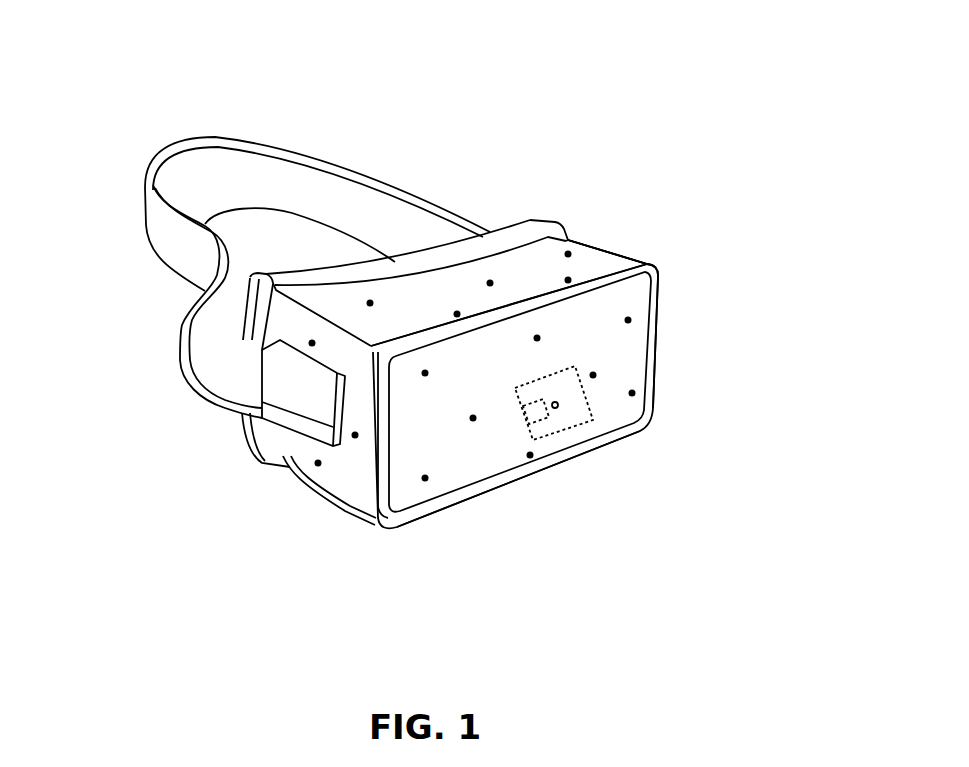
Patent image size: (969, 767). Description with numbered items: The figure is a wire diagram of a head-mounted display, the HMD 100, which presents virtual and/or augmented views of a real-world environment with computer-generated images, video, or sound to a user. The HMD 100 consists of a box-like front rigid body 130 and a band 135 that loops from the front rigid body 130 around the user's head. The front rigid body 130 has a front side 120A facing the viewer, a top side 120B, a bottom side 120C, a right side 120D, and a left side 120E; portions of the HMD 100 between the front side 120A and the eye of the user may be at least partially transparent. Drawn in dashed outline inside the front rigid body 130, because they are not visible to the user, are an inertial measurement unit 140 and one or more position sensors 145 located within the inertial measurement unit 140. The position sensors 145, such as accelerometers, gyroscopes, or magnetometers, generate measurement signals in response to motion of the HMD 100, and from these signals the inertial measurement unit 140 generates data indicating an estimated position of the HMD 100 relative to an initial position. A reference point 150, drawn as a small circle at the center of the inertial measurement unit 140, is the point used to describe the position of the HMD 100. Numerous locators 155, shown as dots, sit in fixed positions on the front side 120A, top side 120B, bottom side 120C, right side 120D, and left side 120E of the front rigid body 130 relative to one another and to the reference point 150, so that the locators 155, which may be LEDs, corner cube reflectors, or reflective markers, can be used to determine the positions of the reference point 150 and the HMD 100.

The HMD 100 is at (420, 34).
The front rigid body 130 is at (660, 290).
The band 135 is at (432, 205).
The front side 120A is at (417, 473).
The top side 120B is at (348, 305).
The bottom side 120C is at (298, 477).
The right side 120D is at (352, 465).
The left side 120E is at (611, 253).
The inertial measurement unit 140 is at (594, 418).
The position sensors 145 is at (538, 414).
The reference point 150 is at (556, 409).
The locators 155 is at (634, 392).